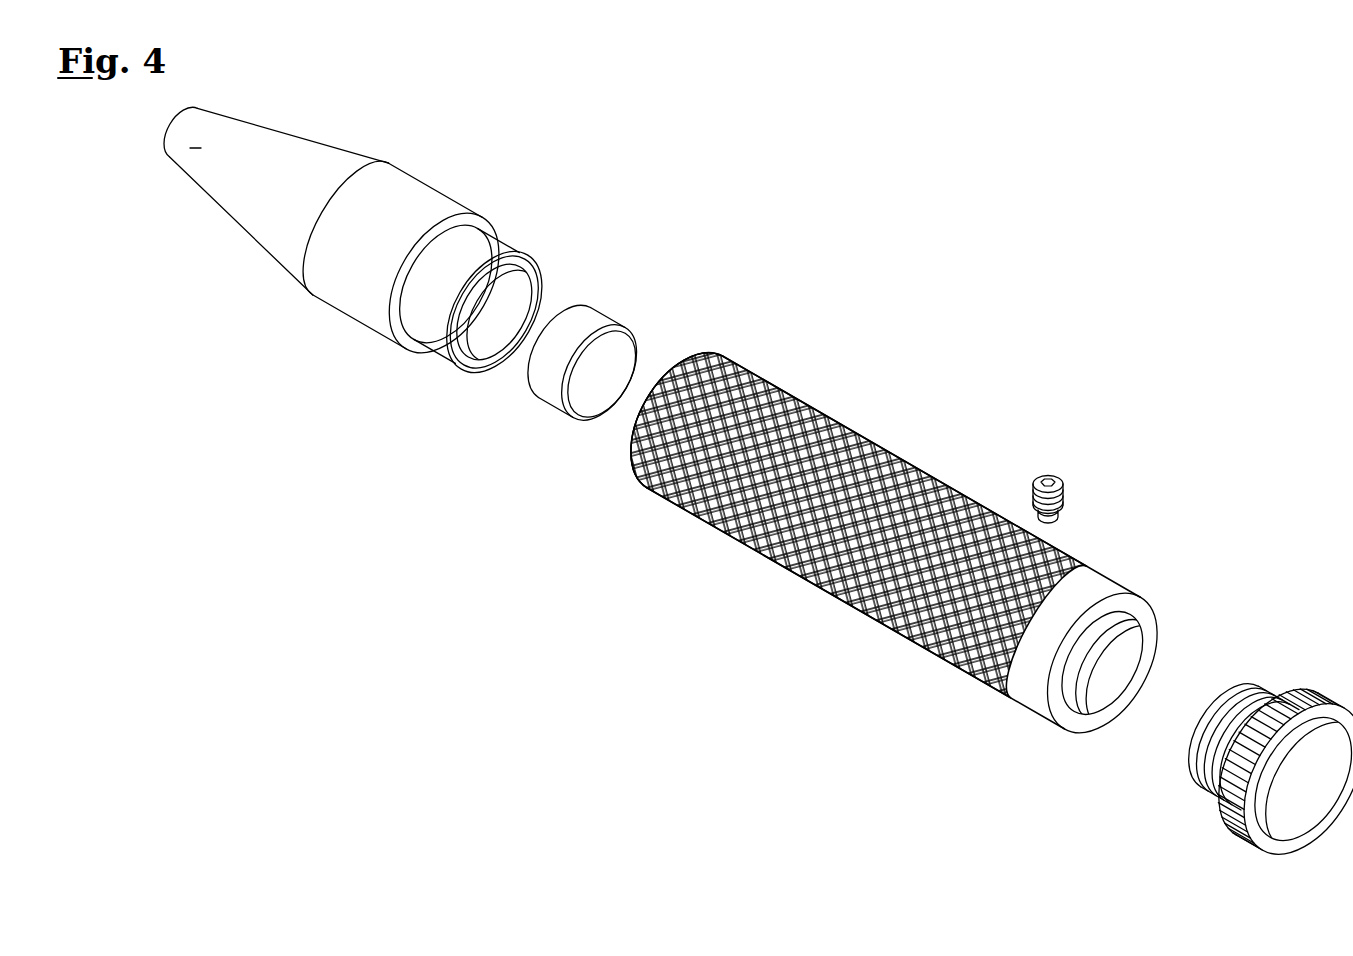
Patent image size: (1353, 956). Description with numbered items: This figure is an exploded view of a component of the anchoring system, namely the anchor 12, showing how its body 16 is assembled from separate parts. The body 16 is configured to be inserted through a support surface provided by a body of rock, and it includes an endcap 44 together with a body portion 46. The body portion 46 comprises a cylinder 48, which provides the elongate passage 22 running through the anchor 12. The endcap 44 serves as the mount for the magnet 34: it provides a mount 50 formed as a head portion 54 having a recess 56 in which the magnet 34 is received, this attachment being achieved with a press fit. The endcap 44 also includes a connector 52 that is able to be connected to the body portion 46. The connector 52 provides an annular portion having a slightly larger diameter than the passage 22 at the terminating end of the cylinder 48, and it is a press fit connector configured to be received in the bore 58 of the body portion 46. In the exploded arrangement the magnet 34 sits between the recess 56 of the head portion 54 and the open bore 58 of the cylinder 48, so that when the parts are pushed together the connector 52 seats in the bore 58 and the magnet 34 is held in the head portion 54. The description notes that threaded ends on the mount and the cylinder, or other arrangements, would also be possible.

The anchor 12 is at (930, 233).
The body 16 is at (900, 322).
The elongate passage 22 is at (1161, 710).
The magnet 34 is at (606, 312).
The endcap 44 is at (298, 287).
The body portion 46 is at (763, 556).
The cylinder 48 is at (811, 583).
The mount 50 is at (532, 262).
The connector 52 is at (452, 360).
The head portion 54 is at (497, 250).
The recess 56 is at (493, 308).
The bore 58 is at (638, 435).